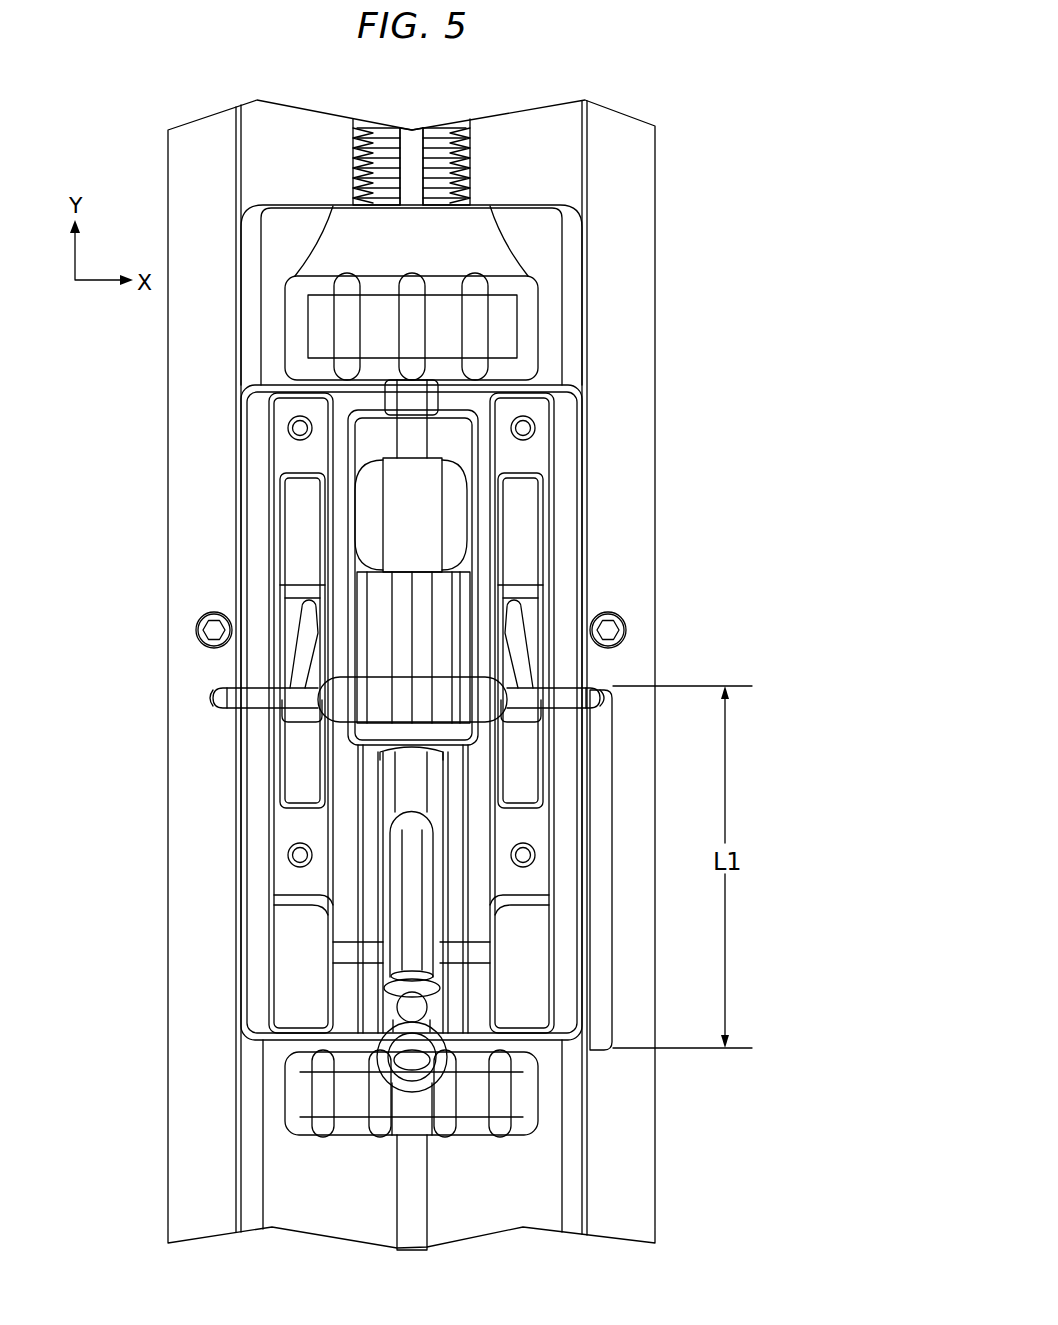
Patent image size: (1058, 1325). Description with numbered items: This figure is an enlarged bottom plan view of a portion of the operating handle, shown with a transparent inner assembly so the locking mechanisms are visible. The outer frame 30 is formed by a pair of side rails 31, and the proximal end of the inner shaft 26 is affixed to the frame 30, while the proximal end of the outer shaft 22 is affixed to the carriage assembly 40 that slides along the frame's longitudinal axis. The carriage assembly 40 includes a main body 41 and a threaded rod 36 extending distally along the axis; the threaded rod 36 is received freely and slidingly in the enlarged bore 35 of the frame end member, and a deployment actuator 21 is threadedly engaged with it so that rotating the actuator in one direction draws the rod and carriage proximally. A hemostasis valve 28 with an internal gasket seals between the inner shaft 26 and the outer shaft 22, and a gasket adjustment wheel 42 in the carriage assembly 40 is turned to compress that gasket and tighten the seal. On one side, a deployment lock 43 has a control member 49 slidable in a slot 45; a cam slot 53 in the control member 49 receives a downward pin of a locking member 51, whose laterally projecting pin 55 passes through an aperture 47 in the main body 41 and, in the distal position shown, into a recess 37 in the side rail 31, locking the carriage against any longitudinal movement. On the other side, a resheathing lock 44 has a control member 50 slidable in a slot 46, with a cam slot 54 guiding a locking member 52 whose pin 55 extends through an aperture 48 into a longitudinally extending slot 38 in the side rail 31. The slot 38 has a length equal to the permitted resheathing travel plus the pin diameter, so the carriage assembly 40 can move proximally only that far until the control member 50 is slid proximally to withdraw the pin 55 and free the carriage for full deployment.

The deployment actuator 21 is at (540, 323).
The outer shaft 22 is at (417, 193).
The inner shaft 26 is at (415, 1227).
The hemostasis valve 28 is at (415, 802).
The outer frame 30 is at (158, 375).
The side rail 31 is at (168, 432).
The enlarged bore 35 is at (463, 160).
The threaded rod 36 is at (427, 128).
The recess 37 is at (213, 700).
The longitudinally extending slot 38 is at (602, 915).
The carriage assembly 40 is at (232, 987).
The main body 41 is at (290, 945).
The gasket adjustment wheel 42 is at (540, 1092).
The deployment lock 43 is at (255, 508).
The resheathing lock 44 is at (570, 490).
The slot 45 is at (283, 478).
The slot 46 is at (528, 473).
The aperture 47 is at (258, 710).
The aperture 48 is at (566, 710).
The control member 49 is at (305, 553).
The control member 50 is at (528, 533).
The locking member 51 is at (300, 700).
The locking member 52 is at (523, 705).
The cam slot 53 is at (308, 620).
The cam slot 54 is at (515, 612).
The laterally projecting pin 55 is at (232, 698).